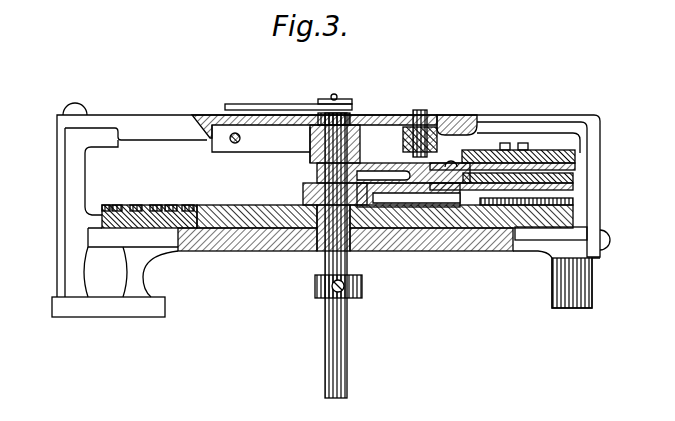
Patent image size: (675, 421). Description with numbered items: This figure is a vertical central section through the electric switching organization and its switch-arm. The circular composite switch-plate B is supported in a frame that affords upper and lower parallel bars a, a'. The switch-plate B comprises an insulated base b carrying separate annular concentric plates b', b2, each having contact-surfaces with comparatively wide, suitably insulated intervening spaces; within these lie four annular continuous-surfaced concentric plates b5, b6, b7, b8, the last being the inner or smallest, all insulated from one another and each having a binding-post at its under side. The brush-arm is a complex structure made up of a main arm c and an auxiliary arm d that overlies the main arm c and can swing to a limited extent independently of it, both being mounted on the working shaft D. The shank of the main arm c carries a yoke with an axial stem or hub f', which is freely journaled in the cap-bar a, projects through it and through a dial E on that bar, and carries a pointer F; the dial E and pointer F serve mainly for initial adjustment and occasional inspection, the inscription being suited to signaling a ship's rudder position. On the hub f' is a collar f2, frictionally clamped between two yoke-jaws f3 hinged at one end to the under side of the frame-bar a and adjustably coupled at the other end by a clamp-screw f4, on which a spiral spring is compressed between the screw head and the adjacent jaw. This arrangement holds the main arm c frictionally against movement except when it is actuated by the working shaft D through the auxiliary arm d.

The upper parallel bar a is at (333, 191).
The lower parallel bar a' is at (371, 267).
The switch-plate B is at (102, 223).
The insulated base b is at (385, 202).
The annular concentric plate b' is at (98, 193).
The annular concentric plate b2 is at (122, 207).
The annular continuous-surfaced concentric plate b5 is at (138, 205).
The annular continuous-surfaced concentric plate b6 is at (165, 207).
The annular continuous-surfaced concentric plate b7 is at (170, 205).
The annular continuous-surfaced concentric plate b8 is at (187, 205).
The main arm c is at (575, 181).
The auxiliary arm d is at (396, 160).
The working shaft D is at (324, 323).
The dial E is at (436, 118).
The pointer F is at (287, 109).
The axial stem or hub f' is at (347, 88).
The collar f2 is at (308, 160).
The yoke-jaws f3 is at (261, 138).
The clamp-screw f4 is at (234, 133).